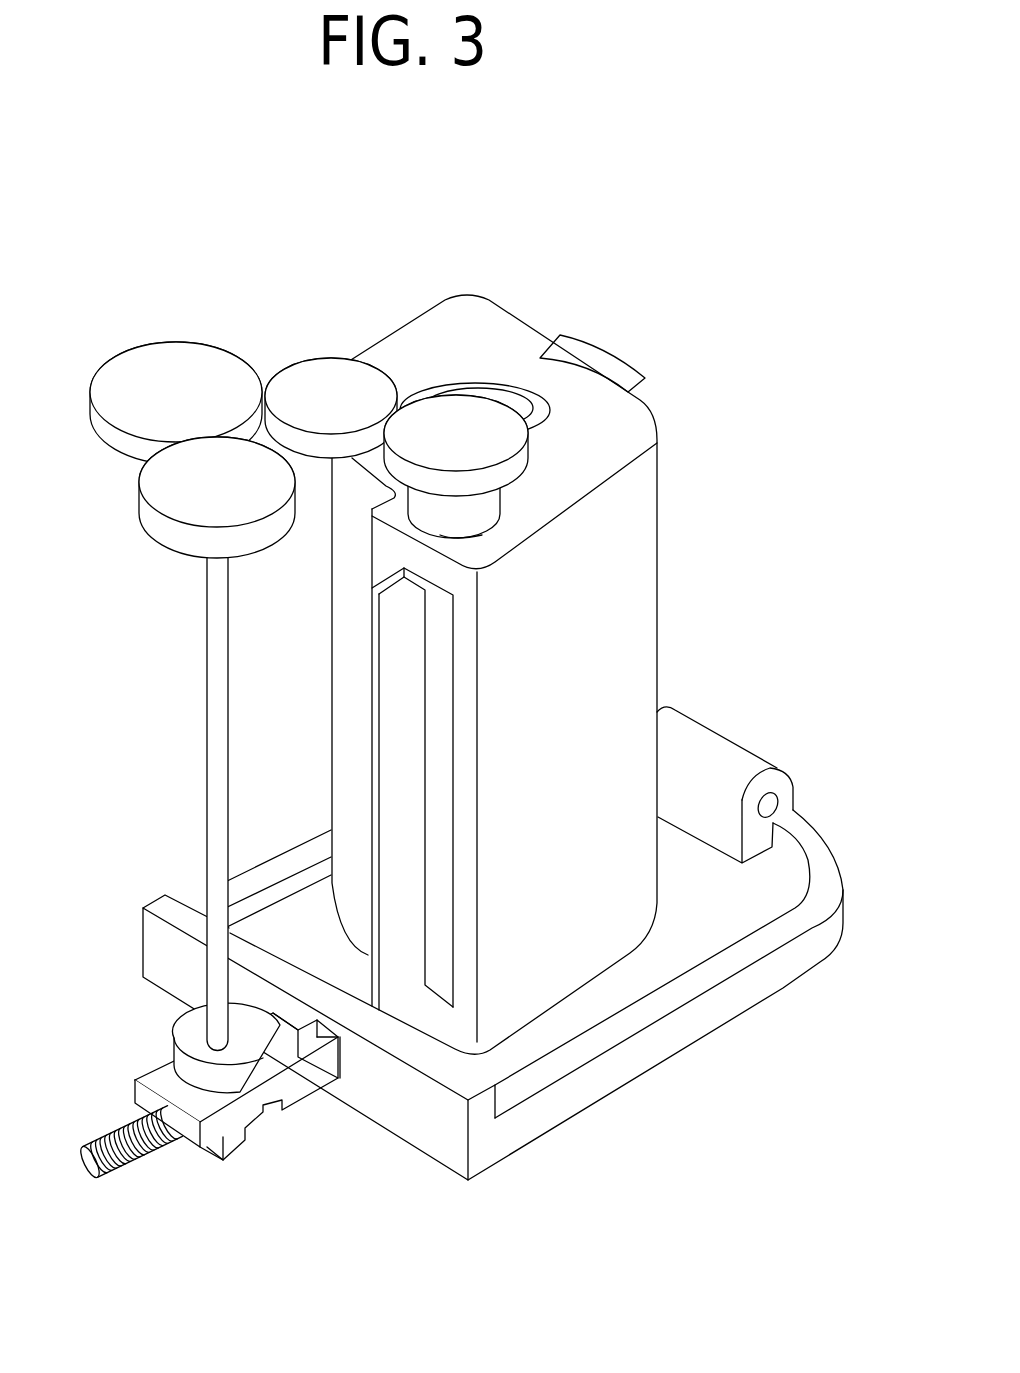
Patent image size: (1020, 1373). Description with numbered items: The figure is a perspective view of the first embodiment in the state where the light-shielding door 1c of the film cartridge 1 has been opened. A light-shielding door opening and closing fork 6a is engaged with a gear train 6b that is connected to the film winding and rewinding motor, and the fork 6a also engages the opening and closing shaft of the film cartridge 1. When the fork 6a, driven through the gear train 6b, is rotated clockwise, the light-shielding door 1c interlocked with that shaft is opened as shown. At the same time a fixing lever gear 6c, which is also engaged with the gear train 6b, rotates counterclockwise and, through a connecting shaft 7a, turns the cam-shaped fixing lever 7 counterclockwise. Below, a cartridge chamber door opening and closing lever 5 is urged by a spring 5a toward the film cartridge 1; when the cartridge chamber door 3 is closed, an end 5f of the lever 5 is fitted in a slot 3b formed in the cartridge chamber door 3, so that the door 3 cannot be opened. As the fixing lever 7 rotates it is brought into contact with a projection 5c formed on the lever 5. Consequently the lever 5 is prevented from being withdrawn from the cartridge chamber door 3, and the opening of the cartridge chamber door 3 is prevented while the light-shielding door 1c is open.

The film cartridge 1 is at (648, 498).
The light-shielding door 1c is at (387, 692).
The cartridge chamber door 3 is at (823, 943).
The slot 3b is at (352, 1075).
The cartridge chamber door opening and closing lever 5 is at (283, 1092).
The spring 5a is at (129, 1165).
The projection 5c is at (295, 1037).
The end 5f is at (330, 1068).
The light-shielding door opening and closing fork 6a is at (441, 400).
The gear train 6b is at (298, 373).
The fixing lever gear 6c is at (172, 503).
The fixing lever 7 is at (187, 1033).
The connecting shaft 7a is at (213, 702).